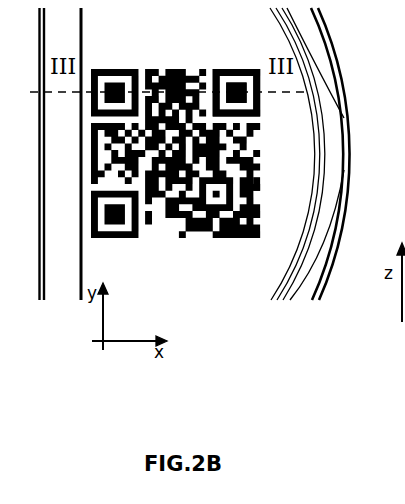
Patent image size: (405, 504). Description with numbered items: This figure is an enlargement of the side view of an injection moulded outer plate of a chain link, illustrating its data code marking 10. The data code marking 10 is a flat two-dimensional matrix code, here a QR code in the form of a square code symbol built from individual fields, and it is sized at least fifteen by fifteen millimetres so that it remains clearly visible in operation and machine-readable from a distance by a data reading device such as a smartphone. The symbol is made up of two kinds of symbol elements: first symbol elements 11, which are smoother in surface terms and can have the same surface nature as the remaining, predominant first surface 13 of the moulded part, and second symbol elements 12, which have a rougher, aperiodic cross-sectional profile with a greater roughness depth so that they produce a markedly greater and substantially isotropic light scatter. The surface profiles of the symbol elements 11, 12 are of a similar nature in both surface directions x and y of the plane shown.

The data code marking 10 is at (229, 60).
The first symbol elements 11 is at (263, 179).
The second symbol elements 12 is at (263, 189).
The first surface 13 is at (172, 264).